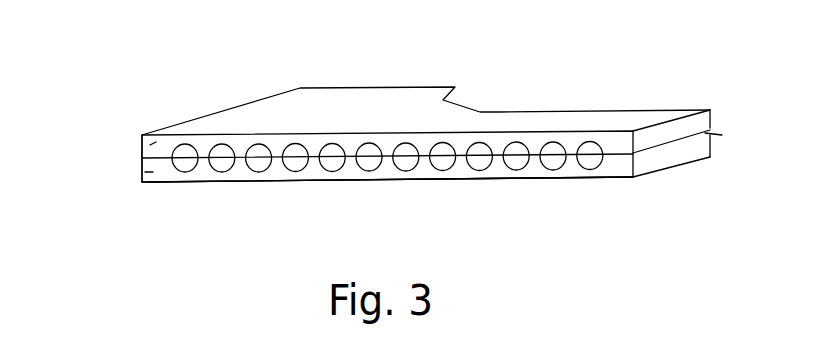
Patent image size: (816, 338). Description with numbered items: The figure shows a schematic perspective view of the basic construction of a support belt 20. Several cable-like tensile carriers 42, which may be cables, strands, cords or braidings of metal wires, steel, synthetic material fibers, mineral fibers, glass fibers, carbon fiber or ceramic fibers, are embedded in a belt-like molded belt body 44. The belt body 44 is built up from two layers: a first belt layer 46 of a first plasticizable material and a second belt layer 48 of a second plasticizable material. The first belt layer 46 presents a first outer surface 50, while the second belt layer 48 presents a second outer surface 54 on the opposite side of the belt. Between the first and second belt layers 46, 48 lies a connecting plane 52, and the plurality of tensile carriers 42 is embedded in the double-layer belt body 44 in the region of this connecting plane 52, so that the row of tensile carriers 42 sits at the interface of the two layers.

The support belt 20 is at (374, 141).
The cable-like tensile carriers 42 is at (590, 156).
The belt body 44 is at (128, 155).
The first belt layer 46 is at (141, 148).
The second belt layer 48 is at (142, 172).
The first outer surface 50 is at (260, 117).
The connecting plane 52 is at (658, 148).
The second outer surface 54 is at (163, 183).